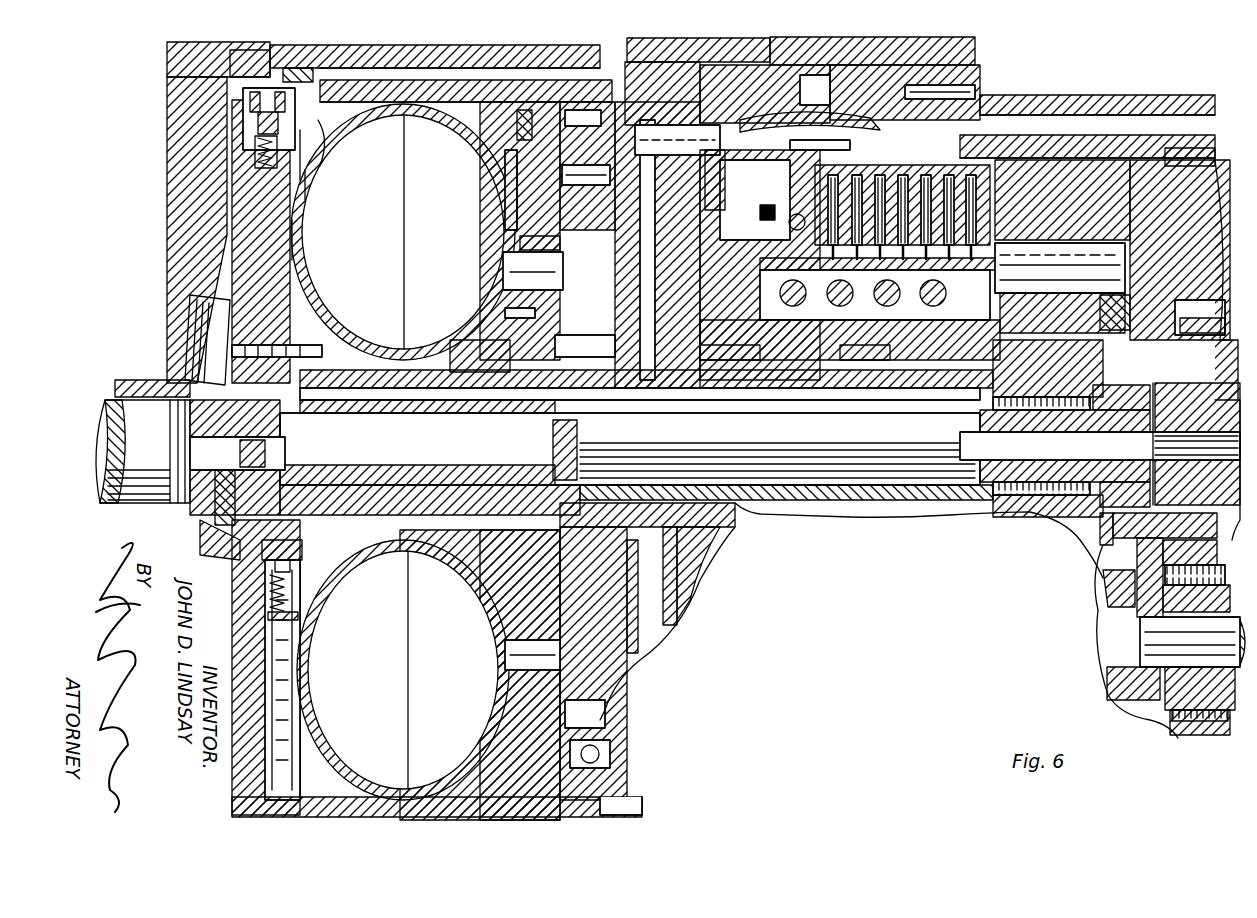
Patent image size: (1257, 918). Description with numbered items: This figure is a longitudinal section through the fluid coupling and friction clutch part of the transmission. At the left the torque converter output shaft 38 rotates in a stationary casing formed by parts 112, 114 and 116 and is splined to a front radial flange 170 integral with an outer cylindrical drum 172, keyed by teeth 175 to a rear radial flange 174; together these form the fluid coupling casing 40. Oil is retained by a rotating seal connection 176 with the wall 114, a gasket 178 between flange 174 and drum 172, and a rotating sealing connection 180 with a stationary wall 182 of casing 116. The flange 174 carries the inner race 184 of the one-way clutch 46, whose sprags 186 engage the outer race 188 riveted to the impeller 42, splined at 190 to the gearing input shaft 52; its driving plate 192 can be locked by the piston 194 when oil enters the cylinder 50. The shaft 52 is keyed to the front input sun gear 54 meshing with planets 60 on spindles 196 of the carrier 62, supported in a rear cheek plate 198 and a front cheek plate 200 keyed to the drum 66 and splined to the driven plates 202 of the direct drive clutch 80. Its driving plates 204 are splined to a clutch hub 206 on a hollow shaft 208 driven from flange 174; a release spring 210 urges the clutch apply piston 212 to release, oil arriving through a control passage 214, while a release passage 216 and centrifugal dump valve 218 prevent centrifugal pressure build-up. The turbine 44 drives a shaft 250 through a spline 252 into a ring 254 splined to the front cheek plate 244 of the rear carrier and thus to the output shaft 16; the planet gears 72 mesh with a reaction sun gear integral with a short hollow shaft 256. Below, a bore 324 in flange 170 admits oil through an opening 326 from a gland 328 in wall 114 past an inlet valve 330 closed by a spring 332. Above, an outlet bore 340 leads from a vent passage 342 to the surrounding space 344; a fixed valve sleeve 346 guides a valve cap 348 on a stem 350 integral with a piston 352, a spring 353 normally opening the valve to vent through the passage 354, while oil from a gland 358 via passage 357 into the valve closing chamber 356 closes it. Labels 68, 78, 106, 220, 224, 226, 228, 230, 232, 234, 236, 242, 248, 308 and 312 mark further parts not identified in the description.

The output shaft 16 is at (1240, 470).
The torque converter output shaft 38 is at (93, 408).
The fluid coupling casing 40 is at (516, 72).
The impeller 42 is at (455, 158).
The turbine 44 is at (318, 136).
The one-way clutch 46 is at (496, 272).
The cylinder 50 is at (591, 166).
The gearing input shaft 52 is at (756, 395).
The front input sun gear 54 is at (1095, 370).
The planets 60 is at (1060, 255).
The carrier 62 is at (1148, 212).
The drum 66 is at (1212, 128).
The gear 68 is at (1212, 160).
The planet gears 72 is at (1218, 582).
The cylinder 78 is at (695, 95).
The direct drive clutch 80 is at (1018, 140).
The housing wall 106 is at (1060, 106).
The stationary casing 112 is at (140, 382).
The stationary wall 114 is at (186, 300).
The casing 116 is at (190, 66).
The front radial flange 170 is at (292, 210).
The outer cylindrical drum 172 is at (428, 68).
The rear radial flange 174 is at (580, 155).
The teeth 175 is at (625, 805).
The rotating seal connection 176 is at (395, 272).
The gasket 178 is at (460, 120).
The rotating sealing connection 180 is at (605, 345).
The stationary wall 182 is at (650, 80).
The inner race 184 is at (515, 310).
The rollers or sprags 186 is at (505, 286).
The cam ring or outer race 188 is at (520, 244).
The spline 190 is at (472, 350).
The driving plate 192 is at (512, 178).
The piston 194 is at (520, 118).
The spindles 196 is at (1125, 262).
The rear cheek plate 198 is at (1135, 305).
The front cheek plate 200 is at (1062, 226).
The driven plates 202 is at (965, 140).
The driving plates 204 is at (902, 230).
The clutch hub 206 is at (875, 289).
The hollow shaft 208 is at (798, 395).
The release spring 210 is at (885, 330).
The clutch apply piston 212 is at (739, 349).
The control passage 214 is at (865, 349).
The release passage 216 is at (810, 255).
The centrifugal dump valve 218 is at (782, 214).
The servo piston 220 is at (800, 150).
The diaphragm 224 is at (810, 125).
The cover 226 is at (925, 65).
The pin 228 is at (678, 137).
The wall 230 is at (685, 256).
The pin 232 is at (810, 75).
The pin 234 is at (935, 86).
The ball 236 is at (800, 140).
The output shaft 242 is at (1140, 640).
The front cheek plate 244 is at (1100, 555).
The housing 248 is at (1232, 380).
The shaft 250 is at (500, 430).
The spline 252 is at (435, 432).
The ring 254 is at (1065, 446).
The short hollow shaft 256 is at (1200, 316).
The shaft 308 is at (1168, 448).
The shaft 312 is at (955, 450).
The bore 324 is at (305, 600).
The opening 326 is at (300, 660).
The oil supply passage or gland 328 is at (310, 562).
The inlet valve 330 is at (300, 585).
The spring 332 is at (302, 620).
The outlet bore 340 is at (245, 100).
The vent passage 342 is at (318, 104).
The space 344 is at (280, 68).
The fixed valve sleeve 346 is at (250, 118).
The valve cap 348 is at (245, 58).
The stem 350 is at (338, 68).
The piston 352 is at (266, 170).
The spring 353 is at (310, 178).
The passage 354 is at (308, 150).
The valve closing chamber 356 is at (197, 230).
The passage 357 is at (298, 238).
The gland 358 is at (262, 346).